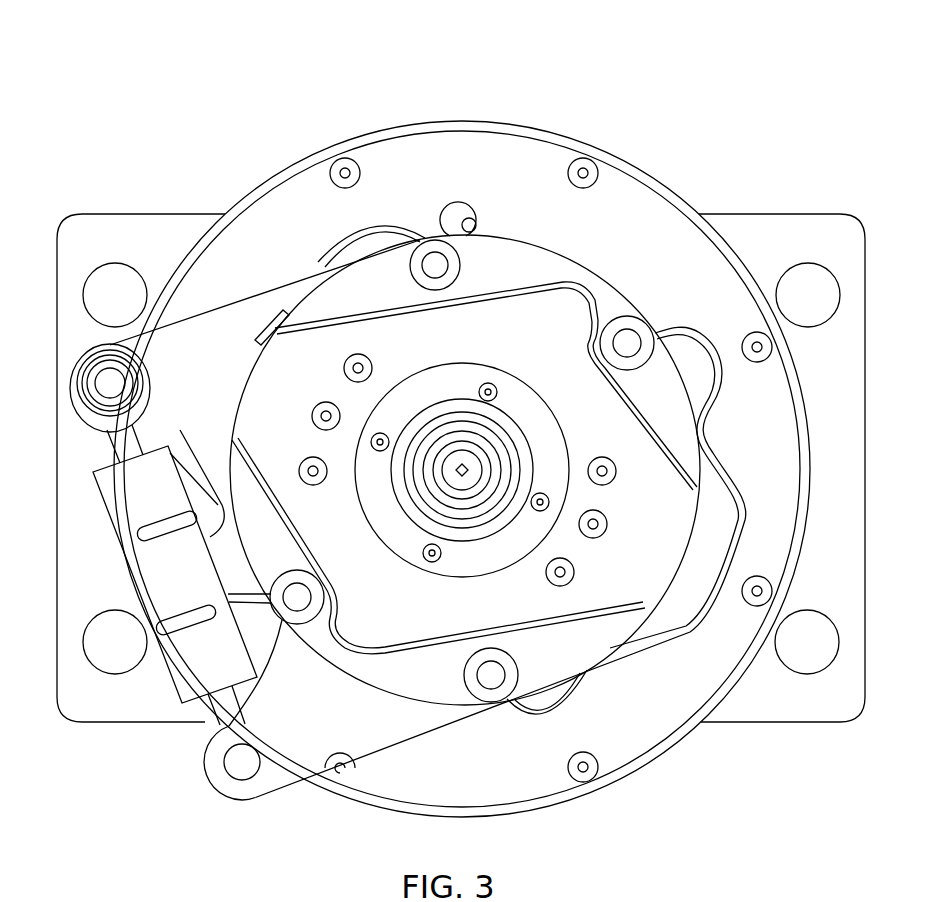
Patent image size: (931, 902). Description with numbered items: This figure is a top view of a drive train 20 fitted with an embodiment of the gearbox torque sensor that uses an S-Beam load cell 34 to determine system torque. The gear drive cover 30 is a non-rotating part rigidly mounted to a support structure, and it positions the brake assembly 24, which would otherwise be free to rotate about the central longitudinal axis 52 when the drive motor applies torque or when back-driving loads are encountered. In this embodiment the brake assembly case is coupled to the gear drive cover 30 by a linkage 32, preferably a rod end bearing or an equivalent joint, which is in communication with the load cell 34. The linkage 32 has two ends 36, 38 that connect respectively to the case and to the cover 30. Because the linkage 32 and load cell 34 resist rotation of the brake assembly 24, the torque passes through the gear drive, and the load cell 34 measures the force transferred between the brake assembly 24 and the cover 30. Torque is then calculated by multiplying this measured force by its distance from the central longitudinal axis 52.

The drive train 20 is at (449, 80).
The gear drive cover 30 is at (548, 158).
The brake assembly 24 is at (593, 648).
The central longitudinal axis 52 is at (462, 476).
The end of linkage 38 is at (80, 358).
The load cell 34 is at (130, 578).
The linkage 32 is at (122, 445).
The end of linkage 36 is at (205, 775).